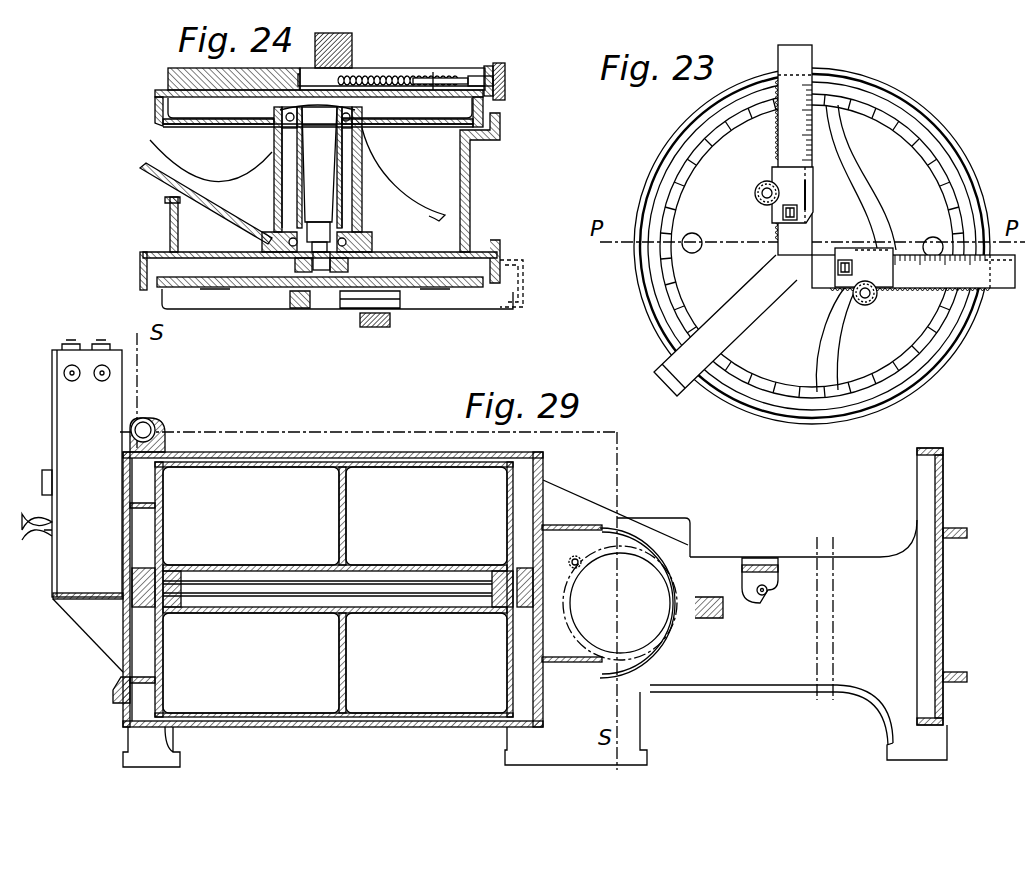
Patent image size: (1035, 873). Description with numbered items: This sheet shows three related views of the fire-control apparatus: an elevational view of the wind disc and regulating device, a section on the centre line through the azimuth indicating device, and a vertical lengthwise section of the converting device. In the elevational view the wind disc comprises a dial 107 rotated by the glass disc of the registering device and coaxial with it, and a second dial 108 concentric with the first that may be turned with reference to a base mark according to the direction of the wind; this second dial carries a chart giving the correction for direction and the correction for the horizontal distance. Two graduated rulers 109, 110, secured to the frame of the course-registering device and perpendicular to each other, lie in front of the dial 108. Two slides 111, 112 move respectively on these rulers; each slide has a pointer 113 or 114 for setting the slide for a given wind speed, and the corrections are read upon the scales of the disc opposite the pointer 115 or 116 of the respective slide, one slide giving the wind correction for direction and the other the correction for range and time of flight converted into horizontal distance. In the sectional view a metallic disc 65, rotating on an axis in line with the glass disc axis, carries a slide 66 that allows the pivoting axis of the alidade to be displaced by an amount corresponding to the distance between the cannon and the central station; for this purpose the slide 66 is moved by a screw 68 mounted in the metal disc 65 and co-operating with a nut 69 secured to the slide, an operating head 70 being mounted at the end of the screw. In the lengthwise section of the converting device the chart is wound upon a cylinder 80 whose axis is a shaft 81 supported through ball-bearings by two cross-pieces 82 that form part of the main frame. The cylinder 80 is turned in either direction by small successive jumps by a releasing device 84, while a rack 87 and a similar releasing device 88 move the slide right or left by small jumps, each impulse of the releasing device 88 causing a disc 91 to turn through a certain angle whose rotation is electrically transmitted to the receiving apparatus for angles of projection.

In FIG. 24, the metallic disc 65 is at (478, 105).
In FIG. 24, the slide 66 is at (178, 77).
In FIG. 24, the screw 68 is at (441, 73).
In FIG. 24, the nut 69 is at (397, 72).
In FIG. 24, the operating head 70 is at (503, 64).
In FIG. 29, the cylinder 80 is at (407, 467).
In FIG. 29, the shaft 81 is at (412, 587).
In FIG. 29, the cross-pieces 82 is at (130, 590).
In FIG. 29, the releasing device 84 is at (72, 506).
In FIG. 29, the rack 87 is at (757, 565).
In FIG. 29, the releasing device 88 is at (670, 527).
In FIG. 29, the disc 91 is at (658, 619).
In FIG. 24, the dial 107 is at (232, 285).
In FIG. 23, the dial 107 is at (680, 320).
In FIG. 24, the second dial 108 is at (283, 288).
In FIG. 23, the second dial 108 is at (743, 352).
In FIG. 23, the graduated ruler 109 is at (798, 63).
In FIG. 23, the graduated ruler 110 is at (972, 277).
In FIG. 23, the slide 111 is at (790, 175).
In FIG. 23, the slide 112 is at (882, 276).
In FIG. 23, the pointer 113 is at (787, 220).
In FIG. 23, the pointer 114 is at (846, 262).
In FIG. 23, the pointer 115 is at (808, 193).
In FIG. 23, the pointer 116 is at (865, 252).